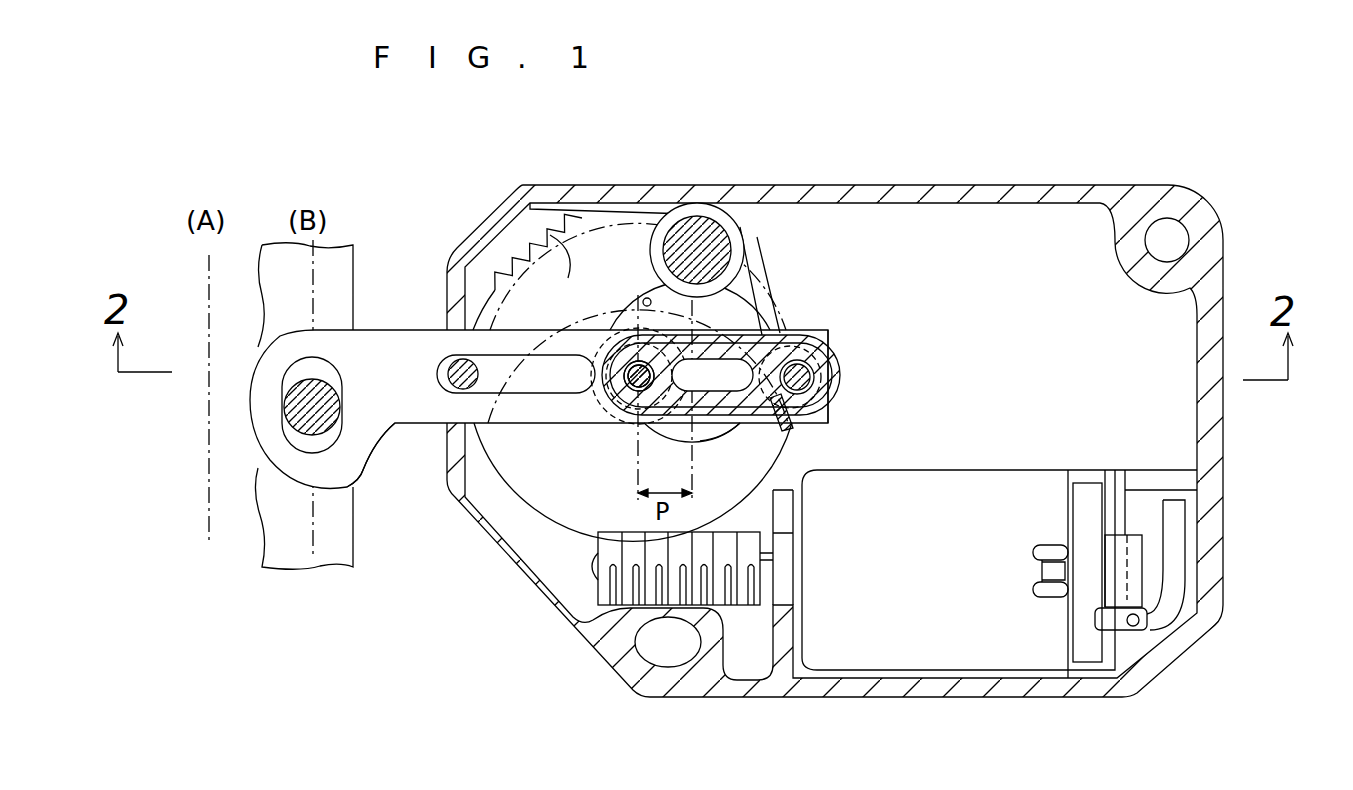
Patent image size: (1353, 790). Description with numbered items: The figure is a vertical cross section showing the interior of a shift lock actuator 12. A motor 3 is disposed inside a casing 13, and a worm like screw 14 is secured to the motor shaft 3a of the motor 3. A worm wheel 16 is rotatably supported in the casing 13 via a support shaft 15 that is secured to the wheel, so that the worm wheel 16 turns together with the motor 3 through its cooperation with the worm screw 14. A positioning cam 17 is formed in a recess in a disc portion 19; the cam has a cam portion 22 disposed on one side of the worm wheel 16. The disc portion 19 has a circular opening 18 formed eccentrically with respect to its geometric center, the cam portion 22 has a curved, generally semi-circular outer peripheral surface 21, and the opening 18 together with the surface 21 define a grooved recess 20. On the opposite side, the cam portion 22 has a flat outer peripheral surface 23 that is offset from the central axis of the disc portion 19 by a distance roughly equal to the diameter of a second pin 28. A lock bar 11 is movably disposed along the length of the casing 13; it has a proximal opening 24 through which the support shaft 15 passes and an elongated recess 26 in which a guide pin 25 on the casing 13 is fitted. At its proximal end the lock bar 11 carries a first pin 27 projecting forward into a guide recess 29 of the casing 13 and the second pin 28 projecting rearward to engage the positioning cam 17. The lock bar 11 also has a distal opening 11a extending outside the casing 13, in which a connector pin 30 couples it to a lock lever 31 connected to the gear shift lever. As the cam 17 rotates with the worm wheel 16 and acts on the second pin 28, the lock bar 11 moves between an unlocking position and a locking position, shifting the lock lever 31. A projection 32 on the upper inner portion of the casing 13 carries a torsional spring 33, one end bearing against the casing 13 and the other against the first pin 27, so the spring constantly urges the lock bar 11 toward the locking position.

The motor 3 is at (936, 480).
The motor shaft 3a is at (772, 578).
The lock bar 11 is at (428, 423).
The distal opening 11a is at (328, 448).
The shift lock actuator 12 is at (838, 178).
The casing 13 is at (1037, 192).
The worm like screw 14 is at (598, 584).
The support shaft 15 is at (620, 332).
The worm wheel 16 is at (497, 285).
The positioning cam 17 is at (624, 434).
The circular opening 18 is at (645, 298).
The disc portion 19 is at (537, 203).
The grooved recess 20 is at (704, 458).
The outer peripheral surface 21 is at (744, 445).
The cam portion 22 is at (640, 450).
The flat outer peripheral surface 23 is at (712, 347).
The proximal opening 24 is at (792, 438).
The guide pin 25 is at (449, 376).
The elongated recess 26 is at (534, 386).
The first pin 27 is at (841, 358).
The second pin 28 is at (683, 347).
The guide recess 29 is at (811, 333).
The connector pin 30 is at (340, 398).
The lock lever 31 is at (356, 262).
The projection 32 is at (746, 235).
The torsional spring 33 is at (784, 282).